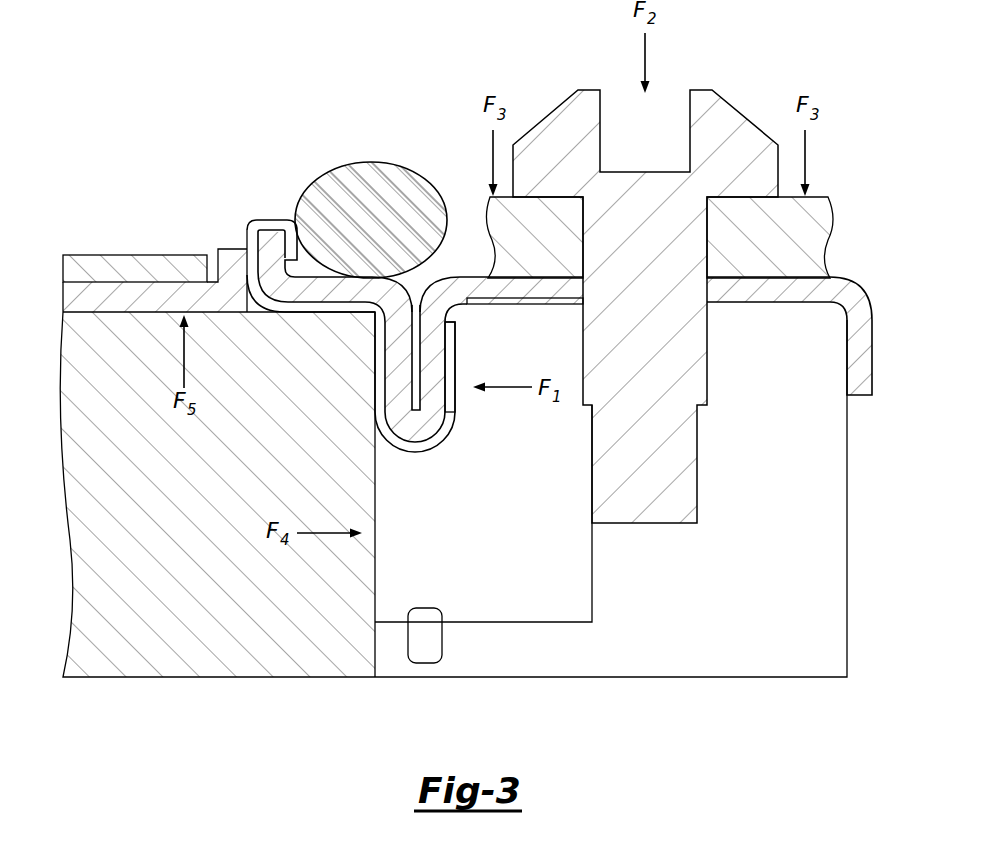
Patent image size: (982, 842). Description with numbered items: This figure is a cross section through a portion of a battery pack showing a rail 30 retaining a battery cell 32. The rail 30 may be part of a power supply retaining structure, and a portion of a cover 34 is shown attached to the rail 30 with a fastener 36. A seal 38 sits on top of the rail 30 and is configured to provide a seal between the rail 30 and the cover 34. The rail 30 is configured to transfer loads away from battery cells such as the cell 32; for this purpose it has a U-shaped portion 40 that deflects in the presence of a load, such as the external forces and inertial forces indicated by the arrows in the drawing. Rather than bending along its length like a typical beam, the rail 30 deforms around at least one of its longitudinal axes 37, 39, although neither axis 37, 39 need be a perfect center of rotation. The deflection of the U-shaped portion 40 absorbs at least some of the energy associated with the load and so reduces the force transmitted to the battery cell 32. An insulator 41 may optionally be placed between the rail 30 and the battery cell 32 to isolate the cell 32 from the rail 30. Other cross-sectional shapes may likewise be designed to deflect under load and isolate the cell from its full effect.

The rail 30 is at (836, 371).
The battery cell 32 is at (377, 513).
The cover 34 is at (818, 197).
The fastener 36 is at (746, 117).
The longitudinal axis 37 is at (467, 327).
The seal 38 is at (338, 166).
The longitudinal axis 39 is at (415, 415).
The U-shaped portion 40 is at (457, 444).
The insulator 41 is at (457, 350).